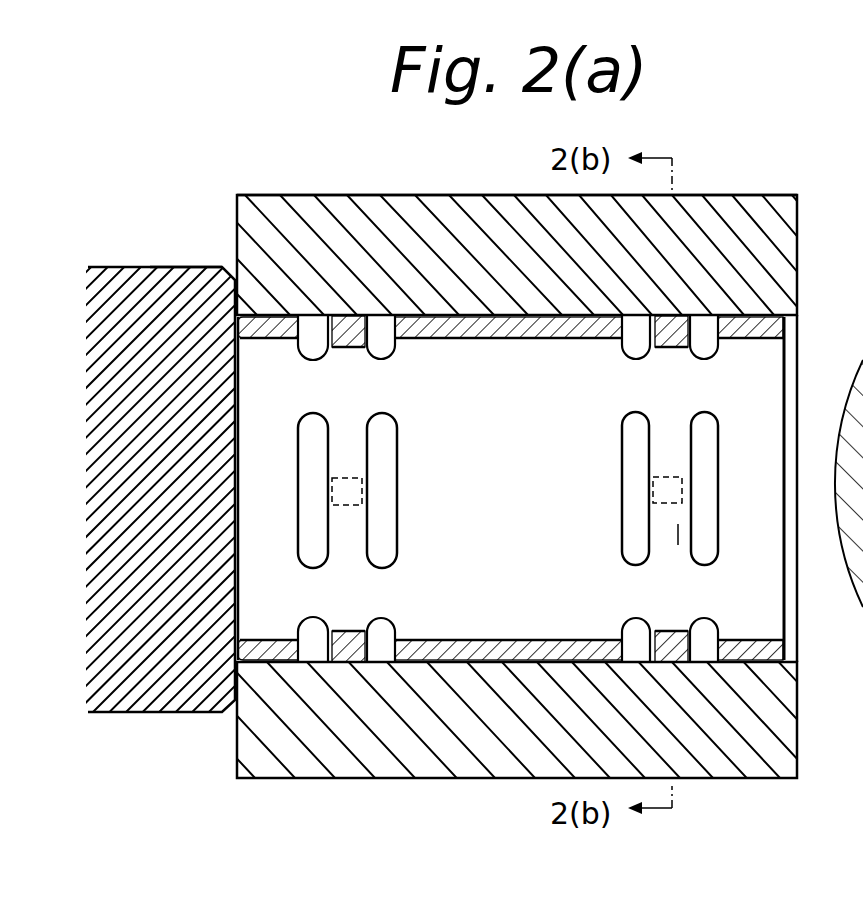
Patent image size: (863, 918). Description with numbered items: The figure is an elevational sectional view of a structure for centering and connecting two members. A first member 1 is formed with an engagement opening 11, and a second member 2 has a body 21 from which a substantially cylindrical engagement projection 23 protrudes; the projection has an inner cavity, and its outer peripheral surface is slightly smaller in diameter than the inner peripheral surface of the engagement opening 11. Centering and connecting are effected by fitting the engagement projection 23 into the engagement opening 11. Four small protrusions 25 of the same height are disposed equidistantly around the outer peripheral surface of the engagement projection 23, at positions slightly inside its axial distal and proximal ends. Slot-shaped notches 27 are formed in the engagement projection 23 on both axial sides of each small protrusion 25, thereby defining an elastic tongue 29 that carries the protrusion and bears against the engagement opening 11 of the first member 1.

The first member 1 is at (505, 188).
The engagement opening 11 is at (797, 320).
The second member 2 is at (140, 262).
The body 21 is at (195, 266).
The engagement projection 23 is at (765, 368).
The small protrusions 25 is at (672, 315).
The notches 27 is at (708, 330).
The elastic tongue 29 is at (678, 524).